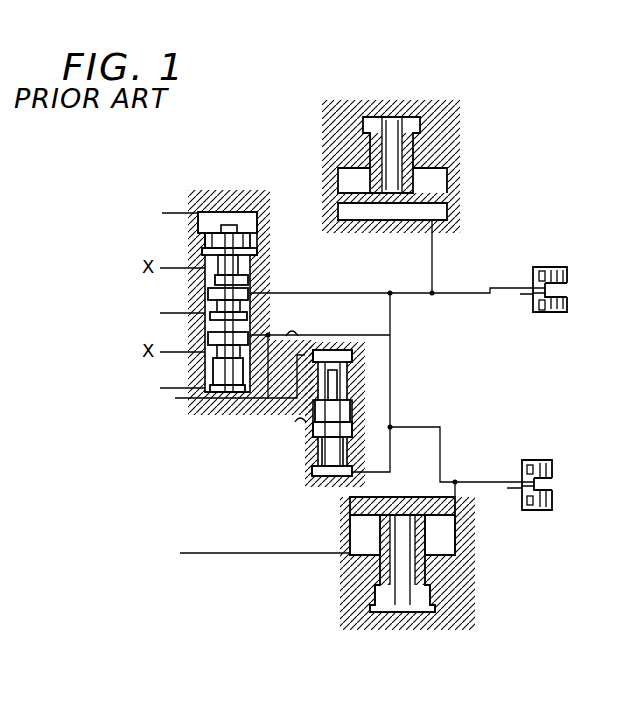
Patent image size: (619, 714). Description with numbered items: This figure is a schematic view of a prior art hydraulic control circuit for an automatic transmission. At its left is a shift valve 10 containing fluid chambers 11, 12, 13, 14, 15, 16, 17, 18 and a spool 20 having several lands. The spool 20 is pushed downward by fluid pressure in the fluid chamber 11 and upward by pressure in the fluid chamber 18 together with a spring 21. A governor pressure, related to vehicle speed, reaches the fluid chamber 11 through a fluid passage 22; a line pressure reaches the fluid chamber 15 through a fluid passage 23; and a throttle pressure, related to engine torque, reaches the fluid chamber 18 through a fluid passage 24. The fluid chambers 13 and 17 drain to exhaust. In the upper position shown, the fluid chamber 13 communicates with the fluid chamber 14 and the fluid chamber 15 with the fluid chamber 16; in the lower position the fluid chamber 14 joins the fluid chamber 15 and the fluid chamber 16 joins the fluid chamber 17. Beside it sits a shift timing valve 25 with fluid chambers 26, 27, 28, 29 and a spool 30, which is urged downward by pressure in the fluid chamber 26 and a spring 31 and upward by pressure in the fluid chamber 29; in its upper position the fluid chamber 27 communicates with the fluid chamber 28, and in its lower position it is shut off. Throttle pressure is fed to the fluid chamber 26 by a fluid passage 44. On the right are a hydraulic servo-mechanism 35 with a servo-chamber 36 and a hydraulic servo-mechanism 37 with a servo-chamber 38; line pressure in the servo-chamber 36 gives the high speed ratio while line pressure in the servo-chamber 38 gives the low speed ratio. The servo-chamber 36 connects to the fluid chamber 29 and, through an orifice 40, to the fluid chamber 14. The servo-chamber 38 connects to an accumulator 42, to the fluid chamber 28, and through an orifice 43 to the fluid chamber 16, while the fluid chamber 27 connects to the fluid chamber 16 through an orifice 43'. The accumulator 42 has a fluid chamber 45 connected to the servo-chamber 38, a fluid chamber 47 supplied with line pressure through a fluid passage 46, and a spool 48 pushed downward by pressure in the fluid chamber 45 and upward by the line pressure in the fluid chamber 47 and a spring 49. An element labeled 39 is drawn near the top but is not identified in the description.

The shift valve 10 is at (231, 147).
The fluid chamber 11 is at (258, 222).
The fluid chamber 12 is at (252, 243).
The fluid chamber 13 is at (248, 273).
The fluid chamber 14 is at (208, 298).
The fluid chamber 15 is at (250, 313).
The fluid chamber 16 is at (208, 338).
The fluid chamber 17 is at (213, 373).
The fluid chamber 18 is at (236, 394).
The spool 20 is at (232, 228).
The spring 21 is at (207, 412).
The fluid passage 22 is at (163, 213).
The fluid passage 23 is at (160, 313).
The fluid passage 24 is at (165, 399).
The shift timing valve 25 is at (383, 321).
The fluid chamber 26 is at (352, 358).
The fluid chamber 27 is at (352, 415).
The fluid chamber 28 is at (348, 432).
The fluid chamber 29 is at (312, 472).
The spool 30 is at (330, 478).
The spring 31 is at (333, 350).
The hydraulic servo-mechanism 35 is at (593, 248).
The servo-chamber 36 is at (539, 272).
The hydraulic servo-mechanism 37 is at (578, 443).
The servo-chamber 38 is at (527, 468).
The accumulator 39 is at (418, 66).
The orifice 40 is at (316, 290).
The accumulator 42 is at (391, 648).
The orifice 43 is at (307, 321).
The orifice 43' is at (275, 433).
The fluid passage 44 is at (268, 382).
The fluid chamber 45 is at (383, 497).
The fluid passage 46 is at (245, 553).
The fluid chamber 47 is at (445, 542).
The spool 48 is at (378, 542).
The spring 49 is at (420, 610).